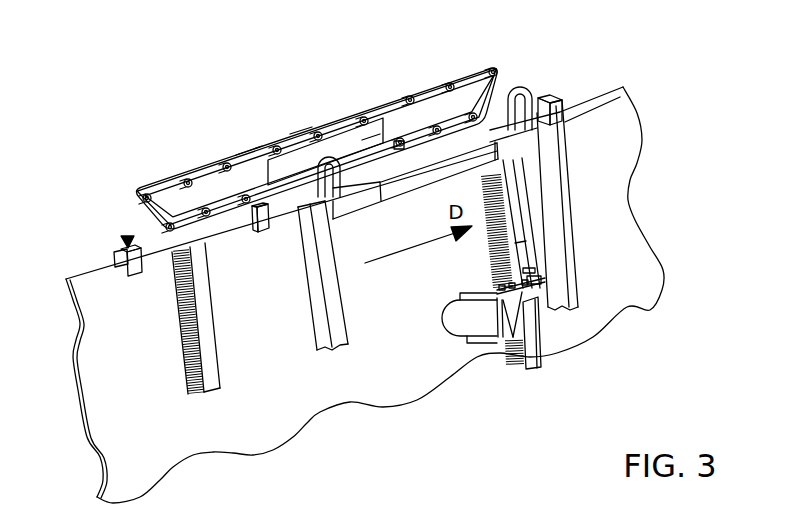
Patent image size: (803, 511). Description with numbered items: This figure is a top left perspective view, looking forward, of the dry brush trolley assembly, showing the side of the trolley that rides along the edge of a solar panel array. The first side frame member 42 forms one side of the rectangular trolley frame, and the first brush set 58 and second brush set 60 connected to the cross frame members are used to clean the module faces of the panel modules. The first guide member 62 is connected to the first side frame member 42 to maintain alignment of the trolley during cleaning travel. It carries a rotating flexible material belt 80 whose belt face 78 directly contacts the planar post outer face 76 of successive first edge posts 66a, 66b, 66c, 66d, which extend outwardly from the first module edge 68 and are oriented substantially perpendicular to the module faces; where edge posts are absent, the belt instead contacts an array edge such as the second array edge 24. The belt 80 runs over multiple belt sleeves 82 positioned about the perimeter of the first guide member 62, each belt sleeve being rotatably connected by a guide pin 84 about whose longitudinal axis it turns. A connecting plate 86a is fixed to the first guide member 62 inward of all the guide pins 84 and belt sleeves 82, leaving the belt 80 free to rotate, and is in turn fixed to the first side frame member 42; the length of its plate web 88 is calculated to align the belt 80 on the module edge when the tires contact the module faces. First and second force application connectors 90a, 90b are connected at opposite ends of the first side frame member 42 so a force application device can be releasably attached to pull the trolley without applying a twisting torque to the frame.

The second array edge 24 is at (552, 212).
The first side frame member 42 is at (540, 136).
The first brush set 58 is at (530, 170).
The second brush set 60 is at (177, 318).
The first guide member 62 is at (494, 88).
The first edge post 66a is at (116, 256).
The first edge post 66b is at (265, 228).
The first edge post 66c is at (398, 142).
The first edge post 66d is at (563, 103).
The first module edge 68 is at (94, 273).
The post outer face 76 is at (128, 236).
The belt face 78 is at (235, 224).
The rotating flexible material belt 80 is at (251, 150).
The belt sleeves 82 is at (300, 128).
The guide pins 84 is at (188, 178).
The connecting plate 86a is at (376, 136).
The plate web 88 is at (355, 160).
The first force application connector 90a is at (302, 168).
The second force application connector 90b is at (530, 90).